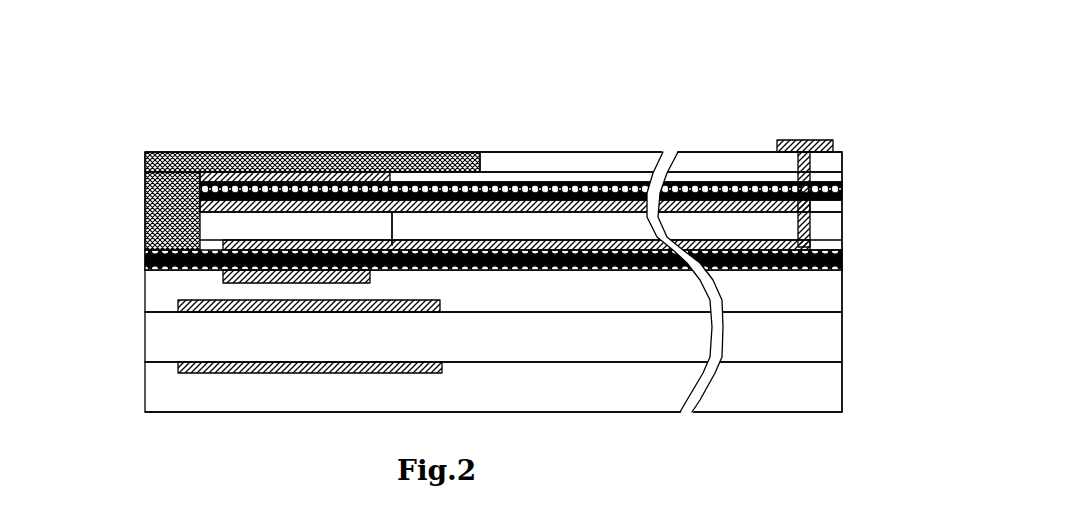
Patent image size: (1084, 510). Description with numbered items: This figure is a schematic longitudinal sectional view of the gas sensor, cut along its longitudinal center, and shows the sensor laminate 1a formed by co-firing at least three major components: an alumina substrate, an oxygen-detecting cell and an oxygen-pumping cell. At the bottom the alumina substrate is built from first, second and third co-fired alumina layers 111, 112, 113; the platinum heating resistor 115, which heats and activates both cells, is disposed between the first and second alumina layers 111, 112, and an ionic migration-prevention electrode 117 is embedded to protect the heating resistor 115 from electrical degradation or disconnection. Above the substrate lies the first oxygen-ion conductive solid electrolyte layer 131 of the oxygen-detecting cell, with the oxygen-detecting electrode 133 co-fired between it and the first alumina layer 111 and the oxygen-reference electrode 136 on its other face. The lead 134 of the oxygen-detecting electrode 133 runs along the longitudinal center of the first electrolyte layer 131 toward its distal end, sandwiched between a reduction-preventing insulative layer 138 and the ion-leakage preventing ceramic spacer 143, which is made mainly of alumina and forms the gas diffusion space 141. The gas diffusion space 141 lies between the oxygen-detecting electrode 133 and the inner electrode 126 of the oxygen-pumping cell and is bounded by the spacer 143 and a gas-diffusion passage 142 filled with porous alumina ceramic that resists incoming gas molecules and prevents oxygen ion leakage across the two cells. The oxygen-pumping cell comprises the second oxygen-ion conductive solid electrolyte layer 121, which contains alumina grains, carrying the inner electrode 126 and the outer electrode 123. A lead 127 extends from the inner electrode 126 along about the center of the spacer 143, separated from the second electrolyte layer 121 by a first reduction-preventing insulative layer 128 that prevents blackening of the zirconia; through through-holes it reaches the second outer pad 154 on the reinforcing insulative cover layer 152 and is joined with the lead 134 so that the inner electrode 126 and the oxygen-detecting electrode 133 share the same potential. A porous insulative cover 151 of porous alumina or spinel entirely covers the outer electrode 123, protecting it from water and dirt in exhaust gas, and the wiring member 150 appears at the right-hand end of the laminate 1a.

The sensor laminate 1a is at (697, 139).
The wiring member 150 is at (842, 153).
The first alumina layer 111 is at (158, 302).
The second alumina layer 112 is at (168, 342).
The third alumina layer 113 is at (158, 377).
The heating resistor 115 is at (440, 312).
The ionic migration-prevention electrode 117 is at (440, 370).
The second oxygen-ion conductive solid electrolyte layer 121 is at (145, 180).
The outer electrode 123 is at (145, 152).
The inner electrode 126 is at (145, 207).
The lead 127 is at (580, 172).
The first reduction-preventing insulative layer 128 is at (657, 165).
The first oxygen-ion conductive solid electrolyte layer 131 is at (145, 252).
The oxygen-detecting electrode 133 is at (145, 227).
The lead 134 is at (470, 245).
The oxygen-reference electrode 136 is at (223, 278).
The reduction-preventing insulative layer 138 is at (689, 246).
The gas diffusion space 141 is at (365, 152).
The gas-diffusion passage 142 is at (272, 180).
The ion-leakage preventing ceramic spacer 143 is at (553, 238).
The porous insulative cover 151 is at (257, 163).
The reinforcing insulative cover layer 152 is at (630, 163).
The second outer pad 154 is at (807, 147).